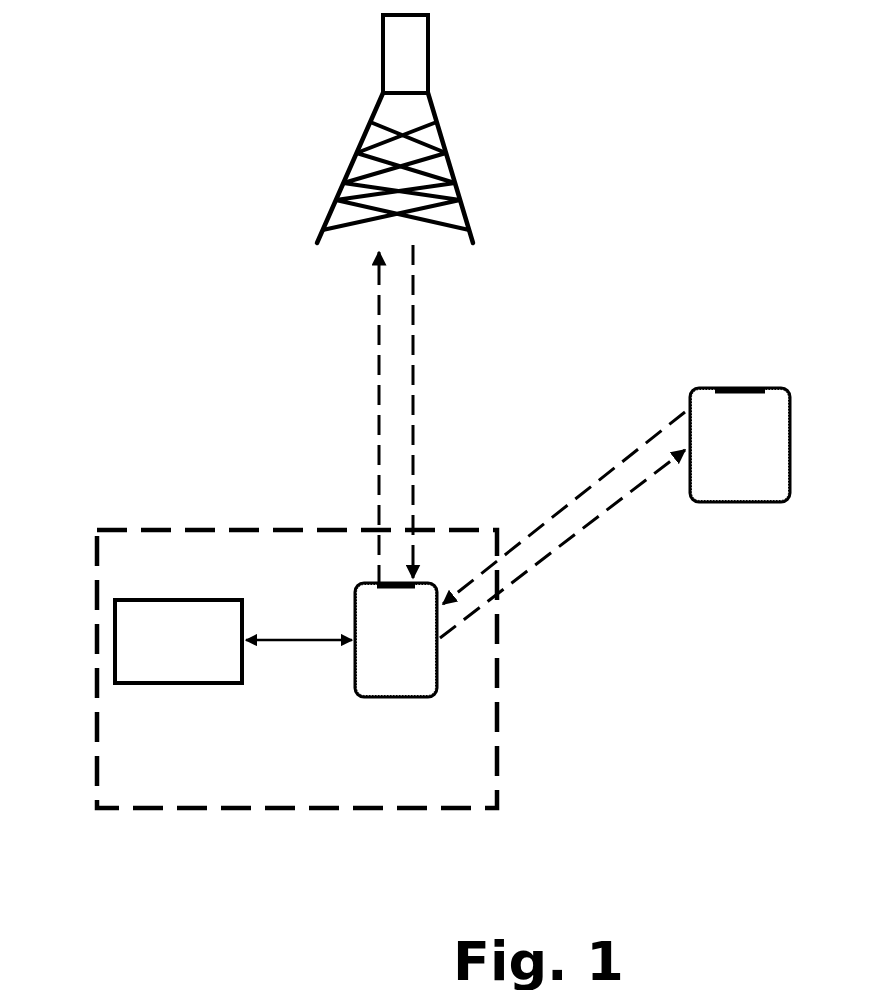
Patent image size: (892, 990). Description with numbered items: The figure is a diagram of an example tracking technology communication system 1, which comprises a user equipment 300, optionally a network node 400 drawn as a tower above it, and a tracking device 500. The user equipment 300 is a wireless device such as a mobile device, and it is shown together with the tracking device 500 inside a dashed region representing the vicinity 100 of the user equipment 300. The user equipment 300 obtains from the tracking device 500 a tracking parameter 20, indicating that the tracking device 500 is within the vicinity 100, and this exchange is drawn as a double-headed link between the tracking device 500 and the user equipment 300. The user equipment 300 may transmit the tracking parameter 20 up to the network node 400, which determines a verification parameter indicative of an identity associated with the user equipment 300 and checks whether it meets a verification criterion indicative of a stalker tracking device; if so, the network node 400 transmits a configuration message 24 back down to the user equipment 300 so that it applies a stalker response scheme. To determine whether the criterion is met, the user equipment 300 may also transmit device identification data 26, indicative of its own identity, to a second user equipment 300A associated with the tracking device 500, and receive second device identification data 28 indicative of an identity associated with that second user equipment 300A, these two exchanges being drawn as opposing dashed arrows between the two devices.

The tracking technology communication system 1 is at (193, 236).
The network node 400 is at (463, 193).
The tracking parameter 20 is at (377, 380).
The configuration message 24 is at (420, 345).
The second device identification data 28 is at (585, 491).
The device identification data 26 is at (515, 583).
The second user equipment 300A is at (740, 445).
The vicinity 100 is at (297, 669).
The tracking device 500 is at (178, 641).
The user equipment 300 is at (396, 640).